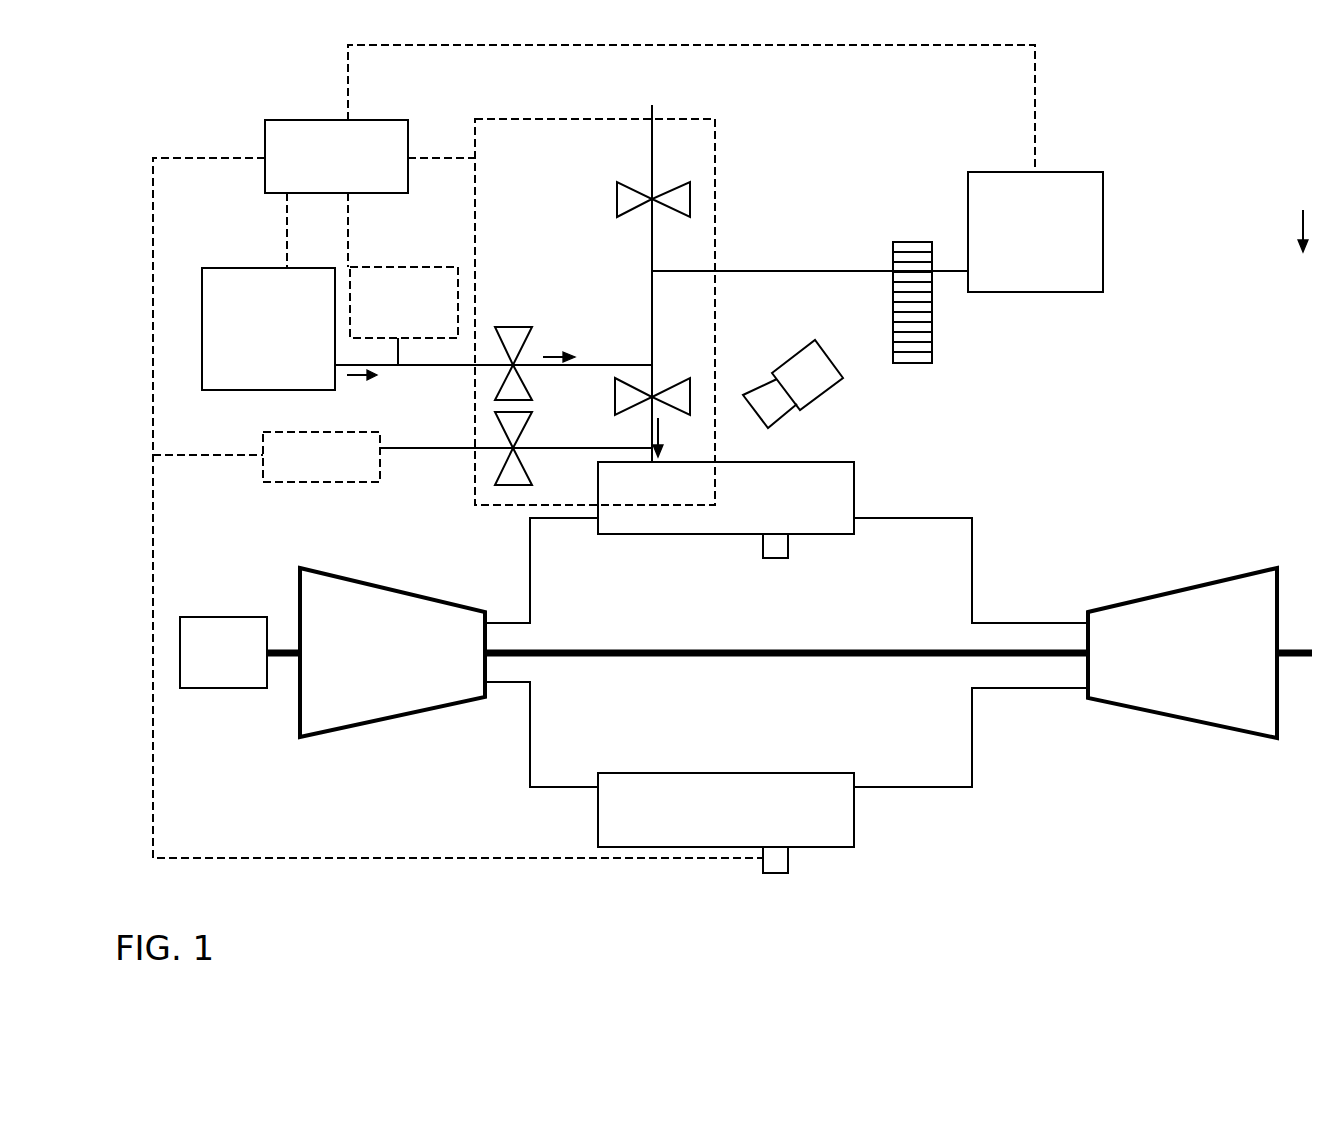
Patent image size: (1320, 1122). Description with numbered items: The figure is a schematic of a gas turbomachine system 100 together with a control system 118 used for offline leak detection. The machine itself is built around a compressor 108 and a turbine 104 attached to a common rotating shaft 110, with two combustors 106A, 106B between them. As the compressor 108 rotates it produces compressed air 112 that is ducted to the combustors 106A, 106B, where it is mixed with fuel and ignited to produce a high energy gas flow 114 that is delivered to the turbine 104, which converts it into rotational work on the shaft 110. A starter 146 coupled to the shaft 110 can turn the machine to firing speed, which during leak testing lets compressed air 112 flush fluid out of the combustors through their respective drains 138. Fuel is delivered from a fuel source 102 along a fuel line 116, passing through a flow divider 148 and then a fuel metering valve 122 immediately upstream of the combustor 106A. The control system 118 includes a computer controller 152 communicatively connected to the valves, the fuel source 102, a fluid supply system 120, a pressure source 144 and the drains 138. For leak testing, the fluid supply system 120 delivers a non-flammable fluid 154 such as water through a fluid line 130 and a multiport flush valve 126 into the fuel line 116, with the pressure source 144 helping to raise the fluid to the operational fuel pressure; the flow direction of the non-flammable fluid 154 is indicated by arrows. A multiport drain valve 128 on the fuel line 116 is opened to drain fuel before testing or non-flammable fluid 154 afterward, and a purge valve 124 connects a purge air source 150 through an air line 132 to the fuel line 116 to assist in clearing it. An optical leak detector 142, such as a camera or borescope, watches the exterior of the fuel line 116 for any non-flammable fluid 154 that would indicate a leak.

The gas turbomachine system 100 is at (1190, 131).
The fuel source 102 is at (1103, 268).
The turbine 104 is at (1182, 588).
The combustor 106A is at (683, 537).
The combustor 106B is at (683, 771).
The compressor 108 is at (420, 595).
The rotating shaft 110 is at (594, 649).
The compressed air 112 is at (530, 583).
The high energy gas flow 114 is at (971, 580).
The fuel line 116 is at (652, 250).
The control system 118 is at (715, 127).
The fluid supply system 120 is at (236, 268).
The fuel metering valve 122 is at (670, 383).
The purge valve 124 is at (522, 467).
The multiport flush valve 126 is at (522, 380).
The multiport drain valve 128 is at (616, 183).
The fluid line 130 is at (435, 367).
The air line 132 is at (427, 452).
The drain 138 is at (790, 550).
The optical leak detector 142 is at (815, 407).
The pressure source 144 is at (410, 266).
The starter 146 is at (217, 617).
The flow divider 148 is at (893, 242).
The purge air source 150 is at (292, 483).
The computer controller 152 is at (265, 138).
The non-flammable fluid 154 is at (831, 321).